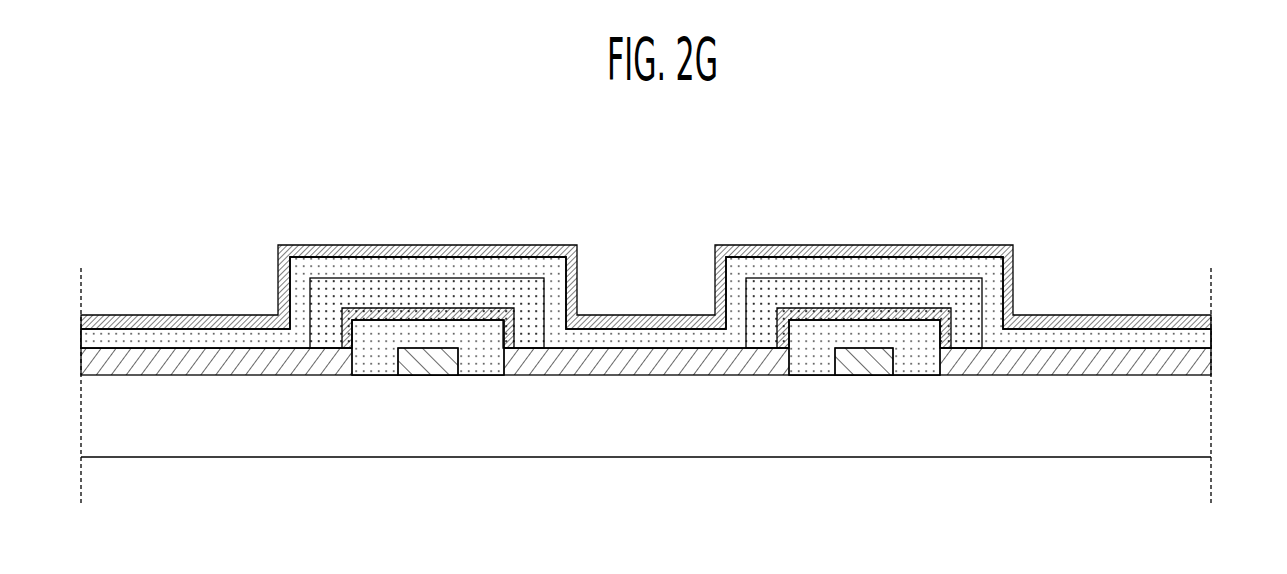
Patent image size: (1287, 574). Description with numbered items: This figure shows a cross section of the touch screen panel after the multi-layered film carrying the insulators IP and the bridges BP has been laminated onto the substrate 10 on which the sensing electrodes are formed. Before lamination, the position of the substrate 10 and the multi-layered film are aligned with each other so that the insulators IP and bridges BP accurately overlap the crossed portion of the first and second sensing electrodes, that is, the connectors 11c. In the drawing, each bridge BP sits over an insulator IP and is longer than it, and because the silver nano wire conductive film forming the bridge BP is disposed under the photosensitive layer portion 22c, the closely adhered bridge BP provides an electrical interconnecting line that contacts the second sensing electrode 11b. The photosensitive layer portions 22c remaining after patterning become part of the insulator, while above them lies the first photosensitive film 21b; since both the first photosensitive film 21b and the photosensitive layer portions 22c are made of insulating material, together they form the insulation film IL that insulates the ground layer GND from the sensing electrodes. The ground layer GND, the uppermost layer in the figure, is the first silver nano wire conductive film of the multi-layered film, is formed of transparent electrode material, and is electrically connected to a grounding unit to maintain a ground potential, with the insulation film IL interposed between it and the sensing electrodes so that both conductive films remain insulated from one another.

The substrate 10 is at (695, 442).
The second sensing electrode 11b is at (304, 350).
The connector 11c is at (425, 360).
The insulation film IL is at (646, 243).
The first photosensitive film 21b is at (478, 265).
The photosensitive layer portion 22c is at (525, 288).
The insulator IP is at (373, 330).
The bridge BP is at (426, 313).
The ground layer GND is at (800, 245).